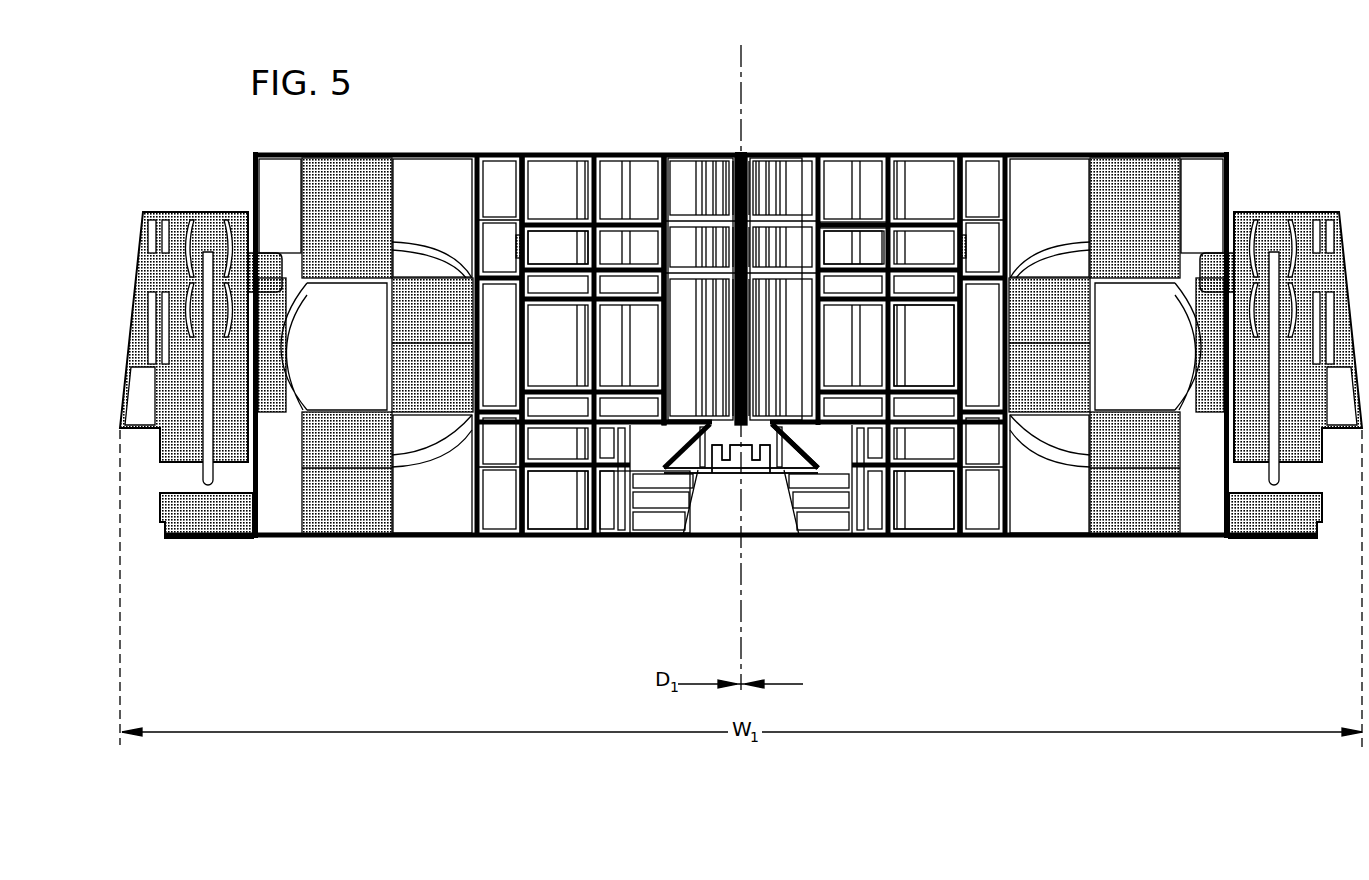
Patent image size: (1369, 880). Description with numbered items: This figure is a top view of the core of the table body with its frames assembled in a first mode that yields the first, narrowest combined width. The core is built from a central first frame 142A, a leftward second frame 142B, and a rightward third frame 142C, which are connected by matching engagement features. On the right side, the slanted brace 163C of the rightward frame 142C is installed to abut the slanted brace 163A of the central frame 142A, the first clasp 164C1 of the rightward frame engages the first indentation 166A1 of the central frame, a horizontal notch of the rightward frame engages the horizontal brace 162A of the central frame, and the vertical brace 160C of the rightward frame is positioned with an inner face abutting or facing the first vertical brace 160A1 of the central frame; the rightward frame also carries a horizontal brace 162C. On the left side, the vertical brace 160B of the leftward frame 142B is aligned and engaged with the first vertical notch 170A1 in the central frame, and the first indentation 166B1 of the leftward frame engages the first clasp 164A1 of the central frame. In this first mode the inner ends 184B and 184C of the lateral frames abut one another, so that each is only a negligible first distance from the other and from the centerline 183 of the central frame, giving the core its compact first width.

The first frame 142A is at (633, 536).
The second frame 142B is at (549, 536).
The third frame 142C is at (933, 536).
The first vertical brace 160A1 is at (749, 190).
The vertical brace 160B is at (660, 173).
The vertical brace 160C is at (749, 173).
The horizontal brace 162A is at (835, 222).
The horizontal brace 162C is at (852, 228).
The slanted brace 163A is at (812, 452).
The slanted brace 163C is at (832, 455).
The first clasp 164A1 is at (544, 255).
The first clasp 164C1 is at (925, 335).
The first indentation 166A1 is at (950, 348).
The first indentation 166B1 is at (523, 249).
The first vertical notch 170A1 is at (678, 175).
The centerline 183 is at (740, 615).
The inner end 184B is at (736, 403).
The inner end 184C is at (746, 403).